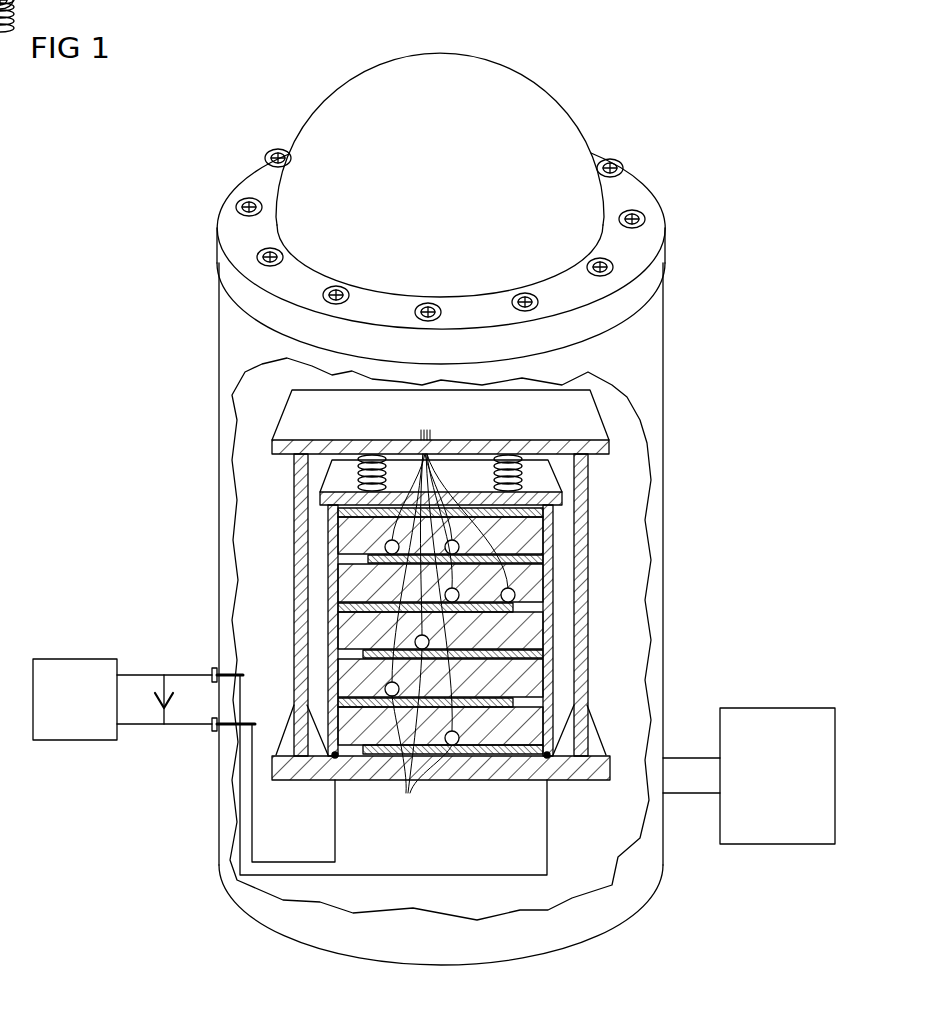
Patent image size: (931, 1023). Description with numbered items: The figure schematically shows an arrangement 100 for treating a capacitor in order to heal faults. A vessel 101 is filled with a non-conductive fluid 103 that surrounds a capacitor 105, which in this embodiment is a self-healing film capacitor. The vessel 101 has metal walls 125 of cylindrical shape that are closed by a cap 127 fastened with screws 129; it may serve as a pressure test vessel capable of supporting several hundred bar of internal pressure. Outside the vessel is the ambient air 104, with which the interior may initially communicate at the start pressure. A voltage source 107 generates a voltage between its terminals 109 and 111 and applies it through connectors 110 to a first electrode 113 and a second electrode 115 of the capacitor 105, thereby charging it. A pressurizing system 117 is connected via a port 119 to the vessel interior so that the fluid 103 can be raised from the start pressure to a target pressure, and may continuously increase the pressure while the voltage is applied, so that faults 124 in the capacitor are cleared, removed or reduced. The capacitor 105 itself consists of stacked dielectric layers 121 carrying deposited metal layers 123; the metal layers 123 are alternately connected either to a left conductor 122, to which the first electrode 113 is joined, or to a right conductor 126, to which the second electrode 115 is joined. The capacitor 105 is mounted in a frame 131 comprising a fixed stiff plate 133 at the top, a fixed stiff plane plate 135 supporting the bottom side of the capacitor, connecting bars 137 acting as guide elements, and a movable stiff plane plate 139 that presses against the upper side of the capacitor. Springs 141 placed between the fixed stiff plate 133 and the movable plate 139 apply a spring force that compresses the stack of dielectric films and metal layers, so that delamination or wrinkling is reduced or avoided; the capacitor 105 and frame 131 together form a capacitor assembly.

The arrangement 100 is at (419, 482).
The vessel 101 is at (363, 482).
The non-conductive fluid 103 is at (281, 407).
The air outside the vessel 104 is at (829, 306).
The capacitor 105 is at (359, 431).
The voltage source 107 is at (78, 665).
The terminal 109 is at (140, 672).
The connectors 110 is at (212, 668).
The terminal 111 is at (145, 730).
The first electrode 113 is at (330, 755).
The second electrode 115 is at (586, 738).
The pressurizing system 117 is at (777, 717).
The port 119 is at (683, 767).
The dielectric layers 121 is at (333, 557).
The left conductor 122 is at (330, 593).
The metal layers 123 is at (545, 512).
The faults 124 is at (450, 613).
The metal walls 125 is at (653, 372).
The right conductor 126 is at (560, 588).
The cap 127 is at (547, 105).
The screws 129 is at (620, 216).
The frame 131 is at (636, 471).
The fixed stiff plate 133 is at (277, 447).
The fixed stiff plane plate 135 is at (455, 768).
The connecting bars 137 is at (300, 522).
The movable stiff plane plate 139 is at (528, 493).
The springs 141 is at (372, 462).